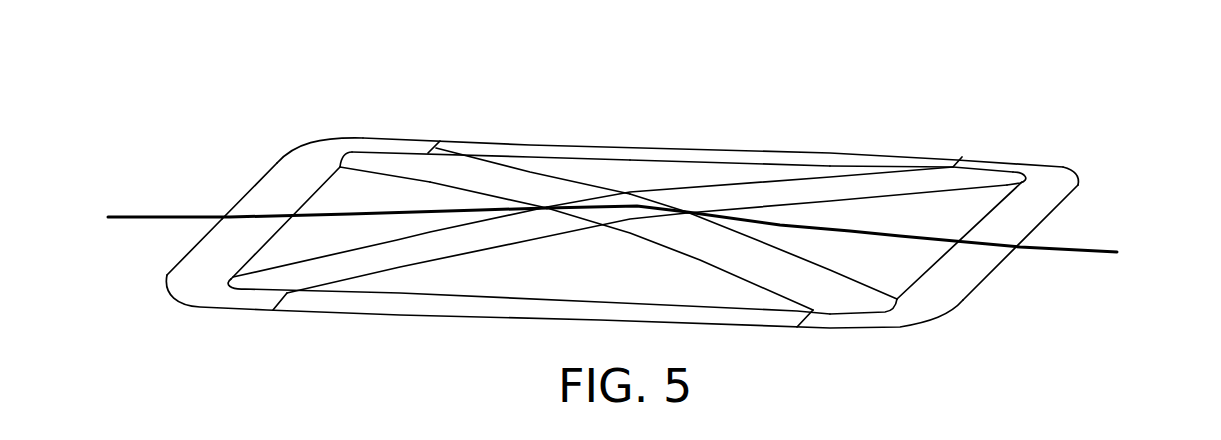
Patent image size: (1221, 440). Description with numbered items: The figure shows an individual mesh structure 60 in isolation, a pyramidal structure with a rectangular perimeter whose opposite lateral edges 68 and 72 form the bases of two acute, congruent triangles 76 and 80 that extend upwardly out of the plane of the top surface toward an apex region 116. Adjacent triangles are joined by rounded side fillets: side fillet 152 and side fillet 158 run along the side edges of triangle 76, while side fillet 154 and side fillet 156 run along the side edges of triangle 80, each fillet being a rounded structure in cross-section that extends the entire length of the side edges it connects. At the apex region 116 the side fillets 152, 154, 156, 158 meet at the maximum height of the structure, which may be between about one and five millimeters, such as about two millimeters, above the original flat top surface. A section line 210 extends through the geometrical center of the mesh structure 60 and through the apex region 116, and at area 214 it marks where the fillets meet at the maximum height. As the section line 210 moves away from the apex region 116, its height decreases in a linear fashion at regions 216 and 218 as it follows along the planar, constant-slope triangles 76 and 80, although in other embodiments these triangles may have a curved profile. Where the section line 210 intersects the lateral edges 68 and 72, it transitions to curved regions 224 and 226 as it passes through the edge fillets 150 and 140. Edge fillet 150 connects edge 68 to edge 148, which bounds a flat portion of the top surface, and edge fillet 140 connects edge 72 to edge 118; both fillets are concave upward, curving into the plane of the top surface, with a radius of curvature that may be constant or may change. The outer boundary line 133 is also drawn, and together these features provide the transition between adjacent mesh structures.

The individual mesh structure 60 is at (962, 113).
The lateral edge 68 is at (271, 183).
The lateral edge 72 is at (915, 257).
The triangle 76 is at (333, 200).
The triangle 80 is at (900, 277).
The apex region 116 is at (675, 178).
The edge 118 is at (1047, 225).
The outer rim edge 133 is at (752, 157).
The edge fillet 140 is at (1053, 198).
The edge 148 is at (227, 218).
The edge fillet 150 is at (213, 272).
The side fillet 152 is at (403, 255).
The side fillet 154 is at (783, 287).
The side fillet 156 is at (847, 187).
The side fillet 158 is at (472, 178).
The section line 210 is at (1117, 251).
The area 214 is at (610, 181).
The region 216 is at (387, 188).
The region 218 is at (875, 211).
The region 224 is at (205, 241).
The region 226 is at (1023, 213).